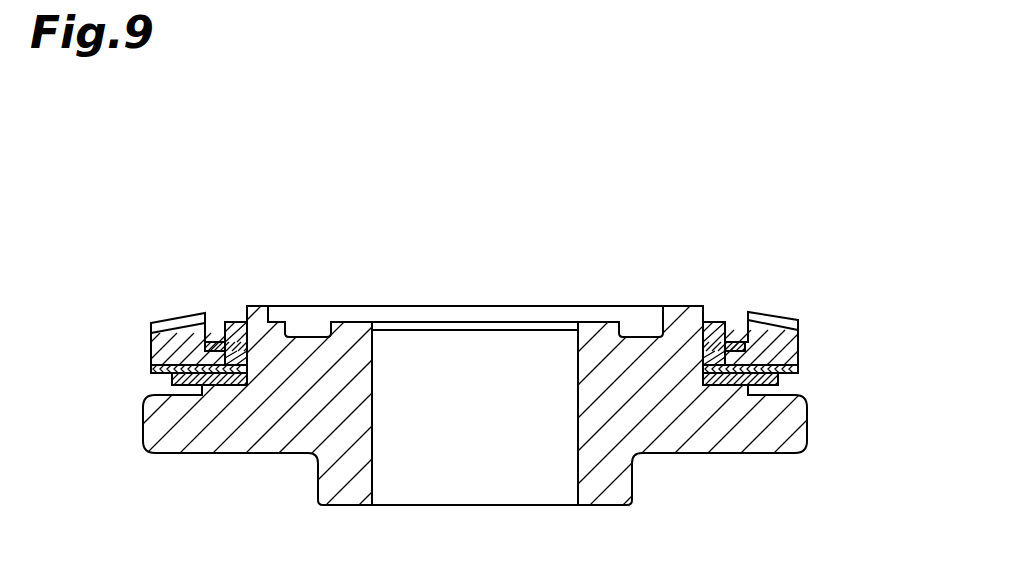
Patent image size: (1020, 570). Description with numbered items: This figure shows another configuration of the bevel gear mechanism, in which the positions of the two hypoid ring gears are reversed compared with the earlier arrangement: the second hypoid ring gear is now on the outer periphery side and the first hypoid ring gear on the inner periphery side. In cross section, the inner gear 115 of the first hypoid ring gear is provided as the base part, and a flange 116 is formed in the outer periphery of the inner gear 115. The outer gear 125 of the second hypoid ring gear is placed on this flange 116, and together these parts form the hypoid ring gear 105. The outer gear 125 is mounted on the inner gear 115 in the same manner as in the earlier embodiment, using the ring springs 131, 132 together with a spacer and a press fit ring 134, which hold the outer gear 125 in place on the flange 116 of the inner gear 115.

The hypoid ring gear 105 is at (524, 237).
The inner gear 115 is at (350, 322).
The outer gear 125 is at (182, 316).
The ring spring 132 is at (216, 326).
The press fit ring 134 is at (713, 322).
The ring spring 131 is at (177, 385).
The flange 116 is at (797, 397).